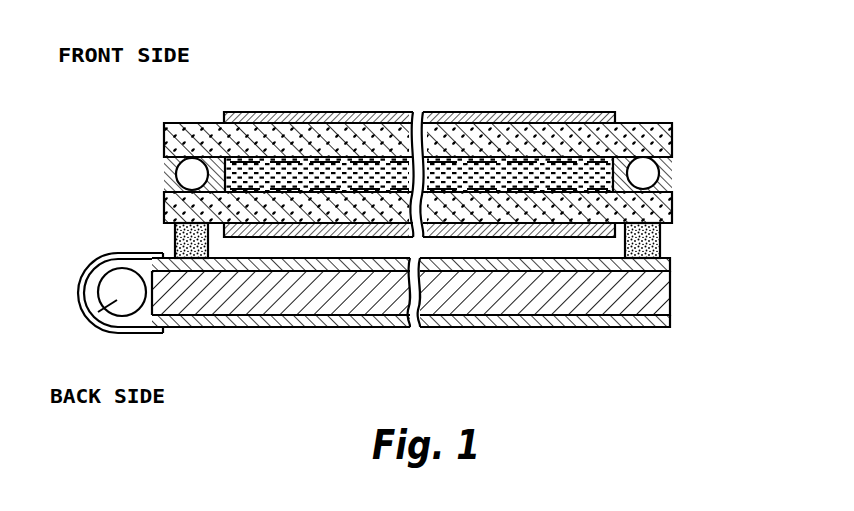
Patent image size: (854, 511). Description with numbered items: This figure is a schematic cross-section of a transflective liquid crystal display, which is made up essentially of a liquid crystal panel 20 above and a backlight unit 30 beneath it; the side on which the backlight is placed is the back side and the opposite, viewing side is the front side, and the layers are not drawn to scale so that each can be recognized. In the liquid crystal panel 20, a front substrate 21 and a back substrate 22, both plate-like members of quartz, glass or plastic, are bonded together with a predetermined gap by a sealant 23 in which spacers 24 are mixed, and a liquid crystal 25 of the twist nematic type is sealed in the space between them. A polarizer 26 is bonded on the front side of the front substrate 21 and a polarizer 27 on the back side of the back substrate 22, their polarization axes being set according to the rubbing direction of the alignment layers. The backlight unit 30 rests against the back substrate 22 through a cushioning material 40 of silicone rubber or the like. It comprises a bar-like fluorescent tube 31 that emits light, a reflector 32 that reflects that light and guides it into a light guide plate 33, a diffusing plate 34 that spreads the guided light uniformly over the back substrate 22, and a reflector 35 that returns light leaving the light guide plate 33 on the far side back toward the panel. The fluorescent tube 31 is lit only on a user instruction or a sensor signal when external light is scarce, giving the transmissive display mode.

The liquid crystal panel 20 is at (417, 151).
The front substrate 21 is at (673, 134).
The back substrate 22 is at (673, 199).
The sealant 23 is at (673, 168).
The spacers 24 is at (180, 175).
The liquid crystal 25 is at (357, 172).
The polarizer 26 is at (494, 112).
The polarizer 27 is at (661, 243).
The backlight unit 30 is at (382, 320).
The fluorescent tube 31 is at (100, 323).
The reflector 32 is at (89, 265).
The light guide plate 33 is at (355, 328).
The diffusing plate 34 is at (672, 258).
The reflector 35 is at (470, 328).
The cushioning material 40 is at (175, 237).